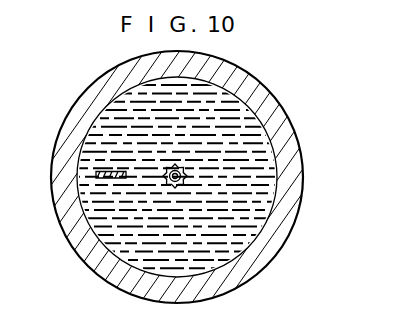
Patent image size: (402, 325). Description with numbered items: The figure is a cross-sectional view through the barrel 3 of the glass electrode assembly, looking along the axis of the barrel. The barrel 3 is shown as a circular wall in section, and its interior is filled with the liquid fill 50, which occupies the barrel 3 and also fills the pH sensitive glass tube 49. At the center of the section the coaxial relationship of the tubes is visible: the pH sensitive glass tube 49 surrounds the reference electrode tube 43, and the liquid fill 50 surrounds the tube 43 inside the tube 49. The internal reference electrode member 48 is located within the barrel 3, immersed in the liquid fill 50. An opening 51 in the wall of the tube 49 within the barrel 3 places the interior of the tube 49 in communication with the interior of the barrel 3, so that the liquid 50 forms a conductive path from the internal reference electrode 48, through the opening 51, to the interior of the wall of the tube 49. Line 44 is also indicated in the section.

The barrel portion 3 is at (80, 115).
The liquid fill 50 is at (128, 100).
The internal reference electrode member 48 is at (97, 173).
The opening 51 is at (165, 178).
The reference electrode tube 43 is at (168, 182).
The suspension line 44 is at (183, 178).
The pH sensitive glass tube 49 is at (184, 183).